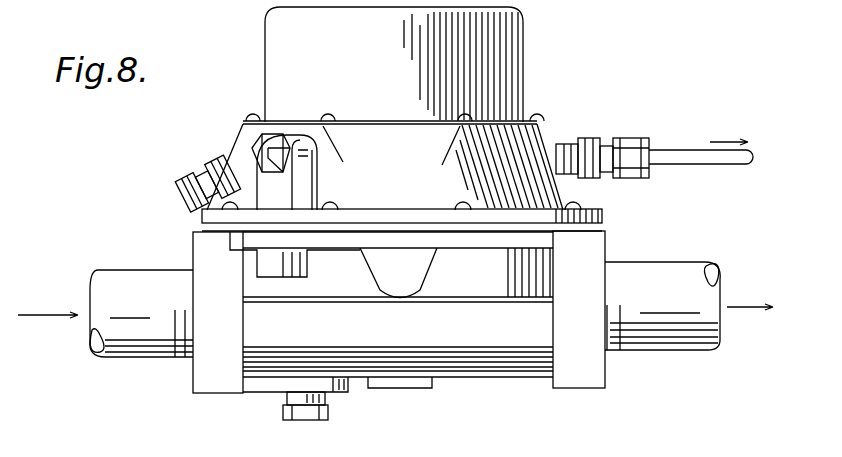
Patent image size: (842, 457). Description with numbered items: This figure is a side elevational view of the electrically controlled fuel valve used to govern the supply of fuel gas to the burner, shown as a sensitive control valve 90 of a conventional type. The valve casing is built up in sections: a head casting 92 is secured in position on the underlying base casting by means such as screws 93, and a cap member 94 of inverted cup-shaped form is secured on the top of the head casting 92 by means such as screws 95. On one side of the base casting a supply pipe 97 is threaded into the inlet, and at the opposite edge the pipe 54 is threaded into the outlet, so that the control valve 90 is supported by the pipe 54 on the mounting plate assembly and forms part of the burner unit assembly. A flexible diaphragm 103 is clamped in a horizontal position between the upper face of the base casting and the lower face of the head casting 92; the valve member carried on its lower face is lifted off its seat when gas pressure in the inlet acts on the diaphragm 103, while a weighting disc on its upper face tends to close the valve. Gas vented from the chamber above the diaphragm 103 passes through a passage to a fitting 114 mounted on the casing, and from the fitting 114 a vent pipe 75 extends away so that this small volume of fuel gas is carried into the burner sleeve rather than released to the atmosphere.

The cap member 94 is at (525, 45).
The control valve 90 is at (542, 80).
The screws 95 is at (537, 118).
The head casting 92 is at (542, 135).
The fitting 114 is at (600, 148).
The vent pipe 75 is at (716, 165).
The screws 93 is at (578, 203).
The flexible diaphragm 103 is at (214, 226).
The supply pipe 97 is at (134, 345).
The pipe 54 is at (681, 342).